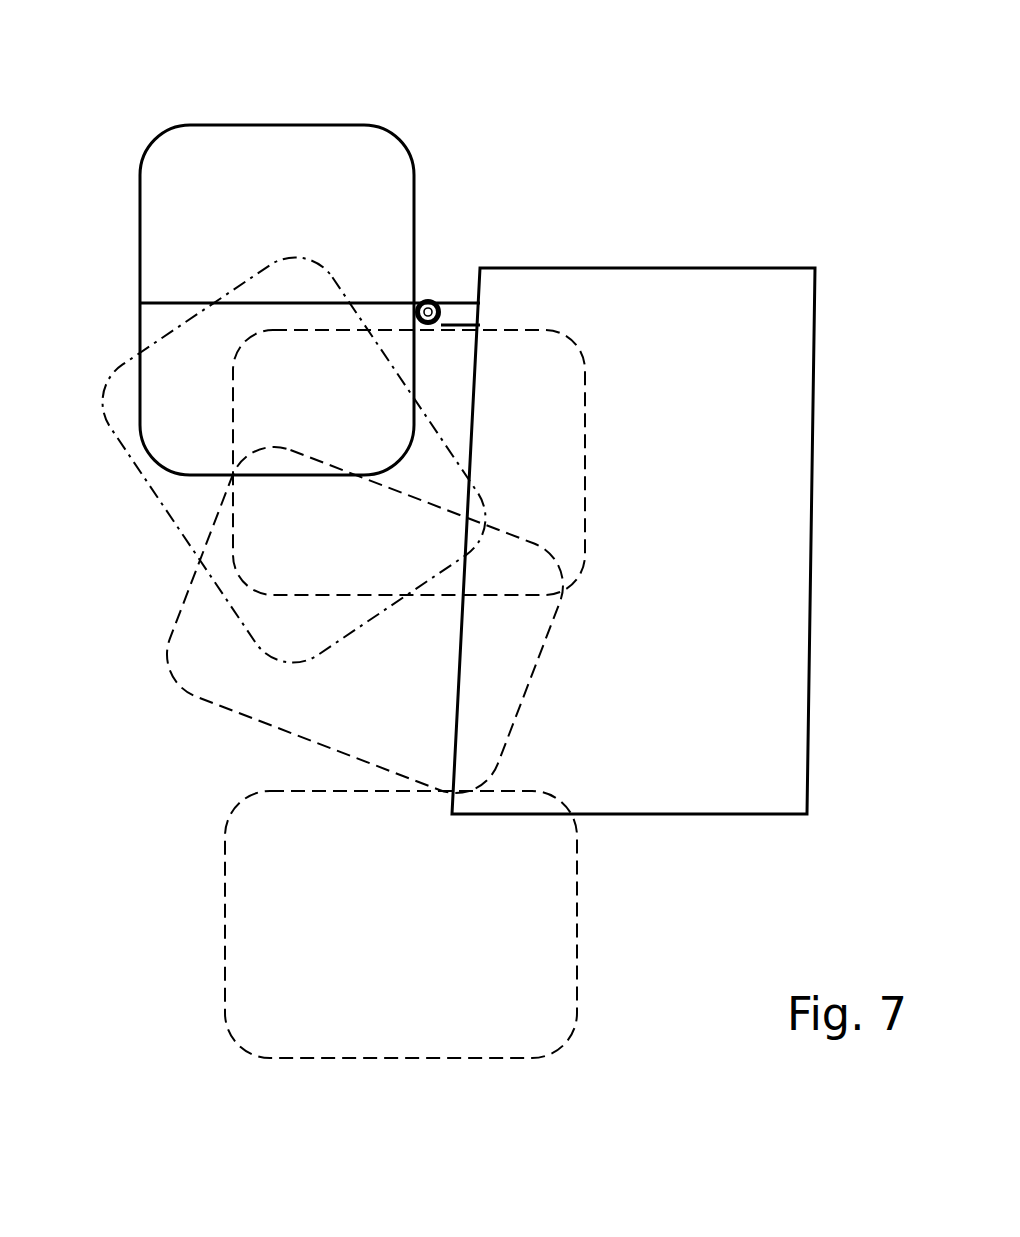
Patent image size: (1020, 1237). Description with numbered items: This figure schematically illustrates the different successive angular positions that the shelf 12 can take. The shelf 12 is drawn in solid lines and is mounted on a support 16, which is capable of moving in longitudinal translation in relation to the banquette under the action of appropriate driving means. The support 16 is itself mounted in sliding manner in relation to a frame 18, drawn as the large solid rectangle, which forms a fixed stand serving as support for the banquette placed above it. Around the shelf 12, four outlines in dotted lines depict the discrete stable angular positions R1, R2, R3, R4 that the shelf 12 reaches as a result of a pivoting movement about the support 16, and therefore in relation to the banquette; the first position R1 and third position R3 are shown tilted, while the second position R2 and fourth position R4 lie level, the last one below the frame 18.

The shelf 12 is at (448, 145).
The support 16 is at (455, 272).
The frame 18 is at (707, 254).
The first discrete stable angular position R1 is at (110, 381).
The second discrete stable angular position R2 is at (568, 342).
The third discrete stable angular position R3 is at (172, 670).
The fourth discrete stable angular position R4 is at (230, 832).